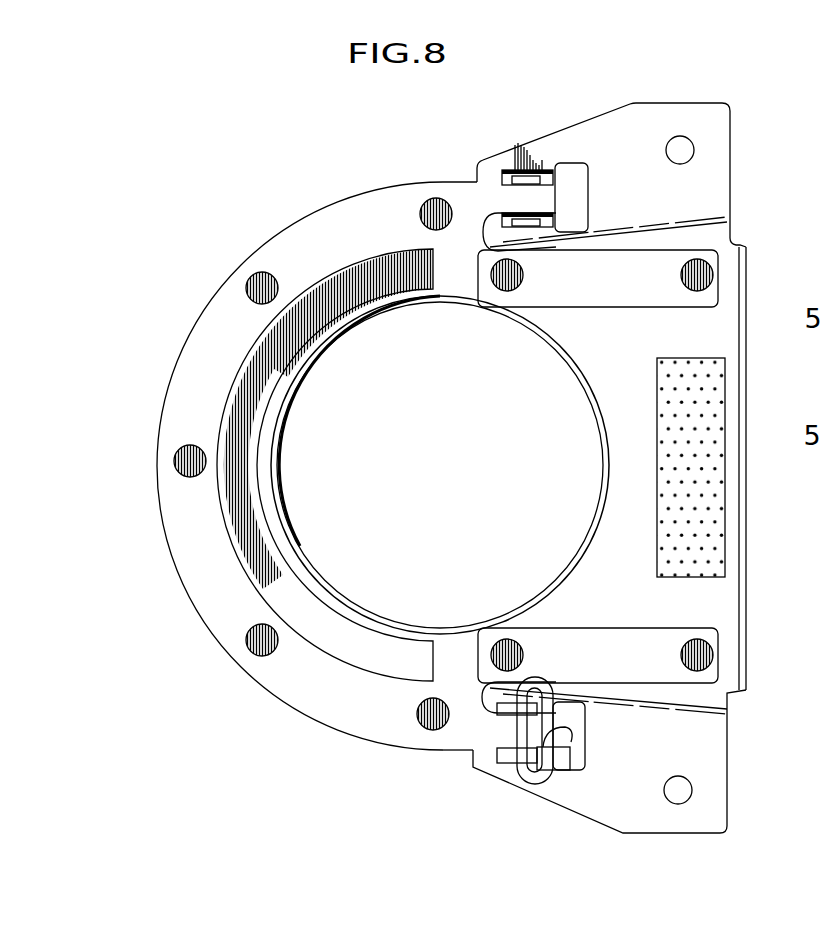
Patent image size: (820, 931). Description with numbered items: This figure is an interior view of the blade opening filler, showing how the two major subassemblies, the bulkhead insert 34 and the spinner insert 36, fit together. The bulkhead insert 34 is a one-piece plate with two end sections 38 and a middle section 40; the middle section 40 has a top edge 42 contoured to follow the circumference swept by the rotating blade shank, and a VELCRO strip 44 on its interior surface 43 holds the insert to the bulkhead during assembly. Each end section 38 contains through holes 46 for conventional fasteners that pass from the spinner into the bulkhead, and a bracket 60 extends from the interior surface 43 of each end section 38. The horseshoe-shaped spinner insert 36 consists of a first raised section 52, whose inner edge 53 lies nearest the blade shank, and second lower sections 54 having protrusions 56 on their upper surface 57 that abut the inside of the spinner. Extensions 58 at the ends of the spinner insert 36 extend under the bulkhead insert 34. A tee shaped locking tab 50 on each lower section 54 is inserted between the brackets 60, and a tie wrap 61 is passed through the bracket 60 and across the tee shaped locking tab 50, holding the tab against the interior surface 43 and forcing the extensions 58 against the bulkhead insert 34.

The bulkhead insert 34 is at (607, 476).
The spinner insert 36 is at (363, 425).
The end section 38 is at (673, 112).
The middle section 40 is at (745, 488).
The top edge 42 is at (590, 398).
The interior surface 43 is at (627, 346).
The VELCRO strip 44 is at (677, 372).
The through holes 46 is at (670, 151).
The tee shaped locking tab 50 is at (586, 211).
The first raised section 52 is at (308, 582).
The inner edge 53 is at (320, 350).
The second lower section 54 is at (183, 590).
The protrusions 56 is at (185, 452).
The upper surface 57 is at (200, 352).
The extensions 58 is at (622, 296).
The bracket 60 is at (525, 227).
The tie wrap 61 is at (546, 782).